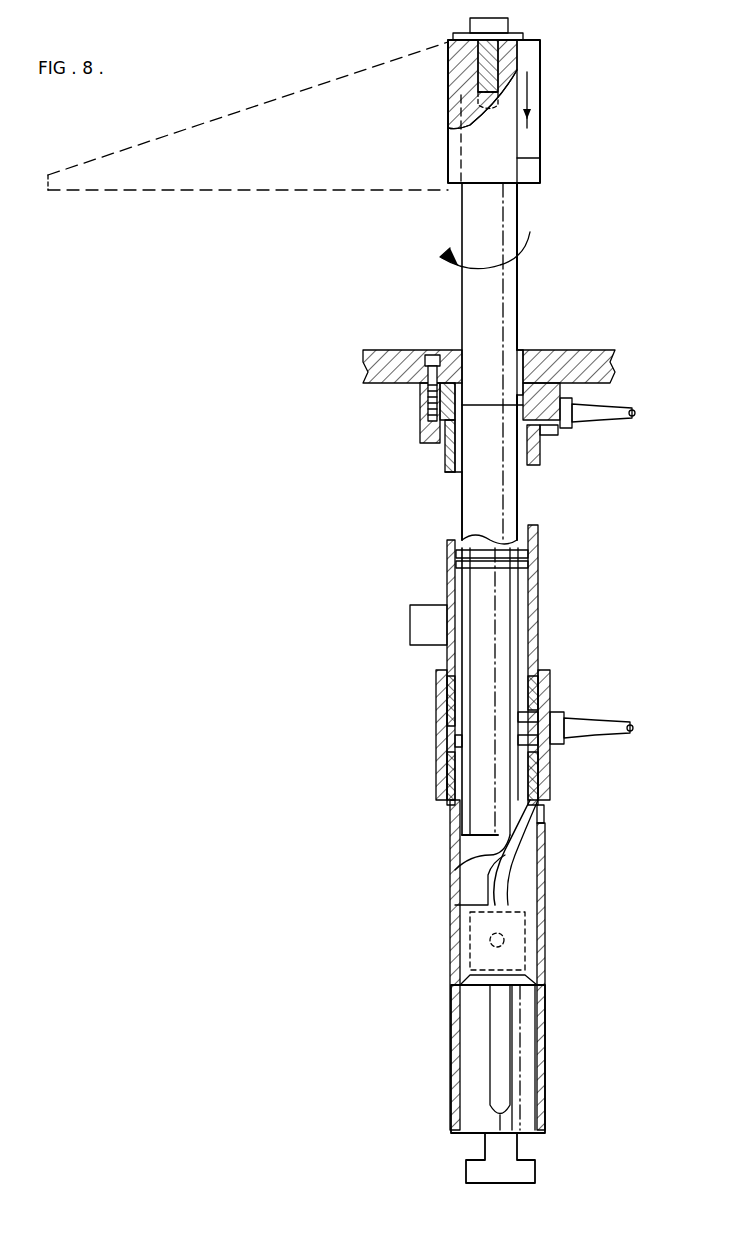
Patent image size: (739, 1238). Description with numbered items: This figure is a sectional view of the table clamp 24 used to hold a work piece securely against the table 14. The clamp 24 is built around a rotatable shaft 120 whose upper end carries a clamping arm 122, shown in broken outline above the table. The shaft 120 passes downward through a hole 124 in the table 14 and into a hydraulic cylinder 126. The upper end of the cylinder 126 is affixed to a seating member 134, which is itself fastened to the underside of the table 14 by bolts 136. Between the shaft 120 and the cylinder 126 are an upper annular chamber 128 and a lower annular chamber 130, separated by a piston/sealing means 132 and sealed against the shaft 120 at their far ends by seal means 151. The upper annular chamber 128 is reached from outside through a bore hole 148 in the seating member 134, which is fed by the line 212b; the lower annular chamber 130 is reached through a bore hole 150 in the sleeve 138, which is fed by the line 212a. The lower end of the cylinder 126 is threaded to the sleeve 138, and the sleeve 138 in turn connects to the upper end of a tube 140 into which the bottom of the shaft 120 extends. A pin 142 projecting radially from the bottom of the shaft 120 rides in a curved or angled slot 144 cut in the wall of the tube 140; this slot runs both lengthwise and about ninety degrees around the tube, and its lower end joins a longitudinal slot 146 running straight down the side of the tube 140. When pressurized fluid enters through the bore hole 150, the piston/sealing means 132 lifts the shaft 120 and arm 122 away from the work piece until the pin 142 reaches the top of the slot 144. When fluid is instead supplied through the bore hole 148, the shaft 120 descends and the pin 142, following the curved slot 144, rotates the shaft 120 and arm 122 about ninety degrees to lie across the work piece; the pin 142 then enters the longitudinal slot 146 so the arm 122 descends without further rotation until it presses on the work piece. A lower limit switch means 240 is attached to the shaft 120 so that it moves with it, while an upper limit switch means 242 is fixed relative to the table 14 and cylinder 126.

The table 14 is at (606, 350).
The table clamp 24 is at (298, 72).
The rotatable shaft 120 is at (518, 216).
The clamping arm 122 is at (186, 118).
The hole 124 is at (523, 352).
The hydraulic cylinder 126 is at (540, 558).
The upper annular chamber 128 is at (450, 472).
The lower annular chamber 130 is at (530, 633).
The piston/sealing means 132 is at (452, 565).
The seating member 134 is at (428, 432).
The bolts 136 is at (432, 352).
The sleeve 138 is at (436, 728).
The tube 140 is at (546, 1060).
The pin 142 is at (543, 818).
The curved or angled slot 144 is at (530, 878).
The longitudinal slot 146 is at (500, 1037).
The bore hole 148 is at (542, 425).
The bore hole 150 is at (540, 720).
The seal means 151 is at (525, 401).
The line 212a is at (626, 742).
The line 212b is at (626, 425).
The lower limit switch means 240 is at (536, 1175).
The upper limit switch means 242 is at (410, 628).